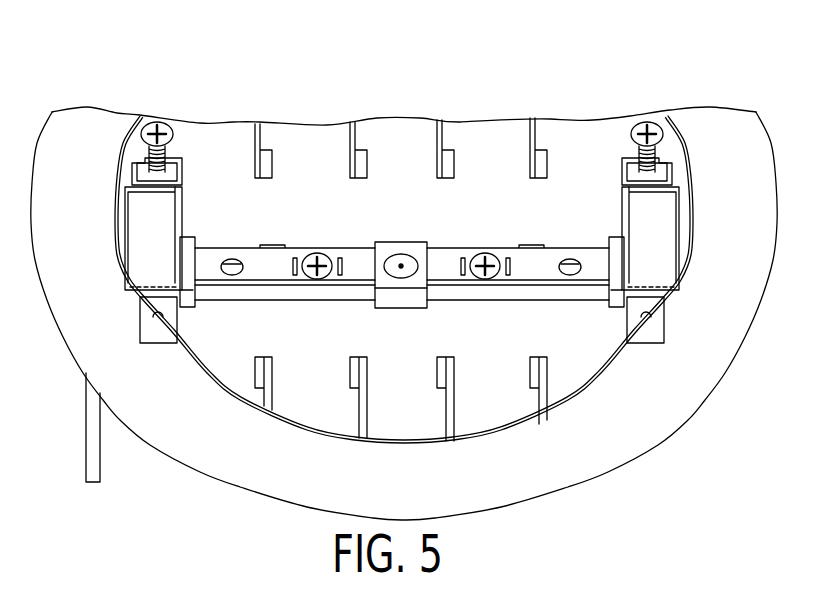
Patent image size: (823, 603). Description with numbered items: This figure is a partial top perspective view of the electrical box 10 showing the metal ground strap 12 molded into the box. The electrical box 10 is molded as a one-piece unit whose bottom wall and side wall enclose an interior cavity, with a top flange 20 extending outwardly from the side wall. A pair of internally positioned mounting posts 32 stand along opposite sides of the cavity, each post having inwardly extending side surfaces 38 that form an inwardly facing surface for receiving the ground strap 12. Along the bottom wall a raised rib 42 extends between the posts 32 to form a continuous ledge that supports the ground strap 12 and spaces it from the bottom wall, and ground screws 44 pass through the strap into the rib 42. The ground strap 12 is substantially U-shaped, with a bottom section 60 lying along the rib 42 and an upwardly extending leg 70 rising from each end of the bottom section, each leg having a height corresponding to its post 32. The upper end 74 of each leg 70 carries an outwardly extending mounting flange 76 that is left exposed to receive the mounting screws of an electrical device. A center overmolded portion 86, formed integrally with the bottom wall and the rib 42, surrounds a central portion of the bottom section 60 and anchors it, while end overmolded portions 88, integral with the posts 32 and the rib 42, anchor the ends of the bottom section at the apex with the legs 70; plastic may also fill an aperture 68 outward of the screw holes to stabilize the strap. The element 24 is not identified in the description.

The electrical box 10 is at (740, 90).
The metal ground strap 12 is at (571, 278).
The top flange 20 is at (610, 423).
The post 24 is at (87, 453).
The mounting post 32 is at (143, 227).
The inwardly extending side surface 38 is at (150, 266).
The raised rib 42 is at (507, 301).
The ground screw 44 is at (316, 254).
The bottom section 60 is at (257, 262).
The aperture 68 is at (231, 275).
The upwardly extending leg 70 is at (182, 191).
The upper end of leg 74 is at (631, 160).
The mounting flange 76 is at (138, 163).
The center overmolded portion 86 is at (395, 242).
The end overmolded portion 88 is at (193, 240).